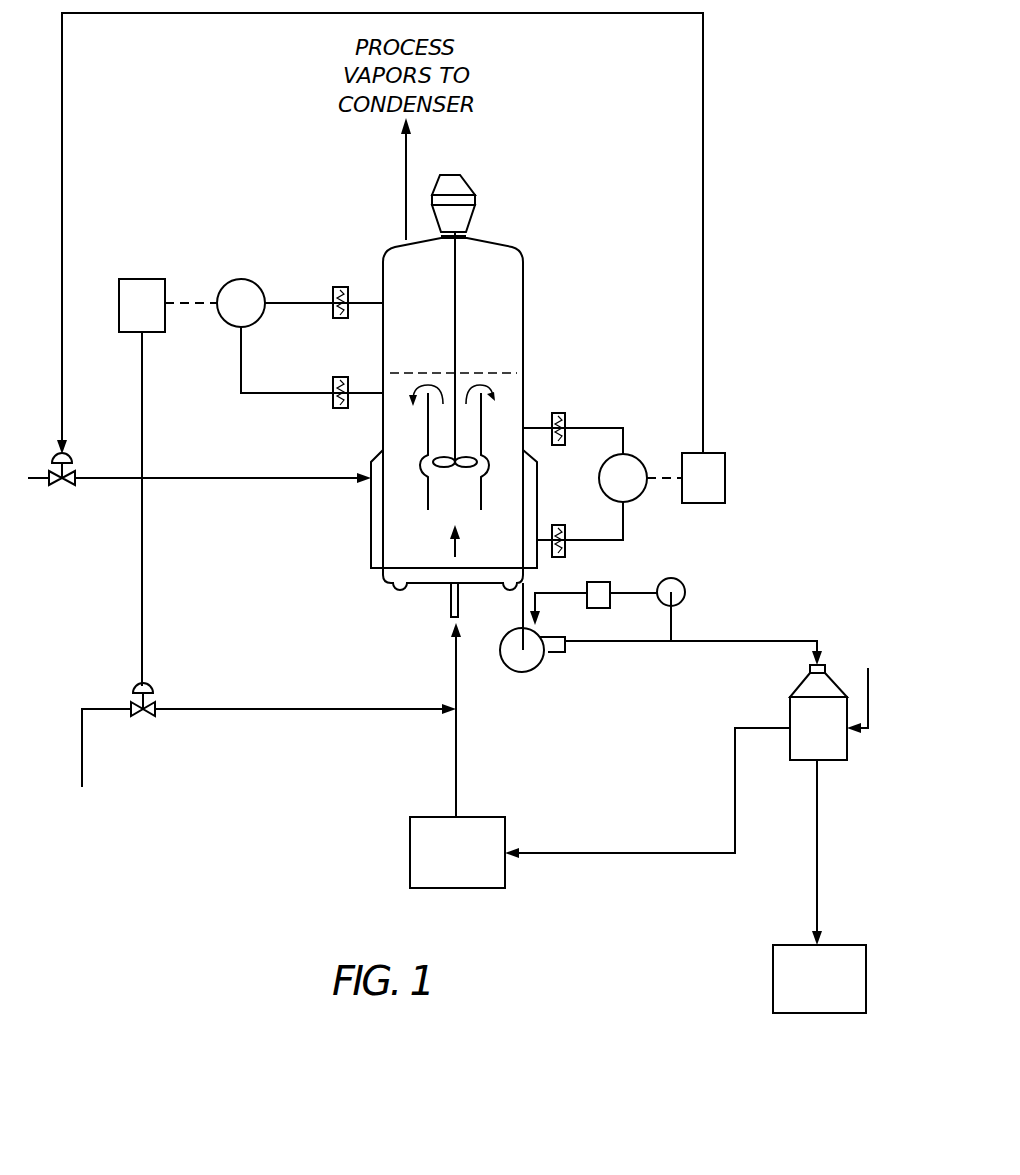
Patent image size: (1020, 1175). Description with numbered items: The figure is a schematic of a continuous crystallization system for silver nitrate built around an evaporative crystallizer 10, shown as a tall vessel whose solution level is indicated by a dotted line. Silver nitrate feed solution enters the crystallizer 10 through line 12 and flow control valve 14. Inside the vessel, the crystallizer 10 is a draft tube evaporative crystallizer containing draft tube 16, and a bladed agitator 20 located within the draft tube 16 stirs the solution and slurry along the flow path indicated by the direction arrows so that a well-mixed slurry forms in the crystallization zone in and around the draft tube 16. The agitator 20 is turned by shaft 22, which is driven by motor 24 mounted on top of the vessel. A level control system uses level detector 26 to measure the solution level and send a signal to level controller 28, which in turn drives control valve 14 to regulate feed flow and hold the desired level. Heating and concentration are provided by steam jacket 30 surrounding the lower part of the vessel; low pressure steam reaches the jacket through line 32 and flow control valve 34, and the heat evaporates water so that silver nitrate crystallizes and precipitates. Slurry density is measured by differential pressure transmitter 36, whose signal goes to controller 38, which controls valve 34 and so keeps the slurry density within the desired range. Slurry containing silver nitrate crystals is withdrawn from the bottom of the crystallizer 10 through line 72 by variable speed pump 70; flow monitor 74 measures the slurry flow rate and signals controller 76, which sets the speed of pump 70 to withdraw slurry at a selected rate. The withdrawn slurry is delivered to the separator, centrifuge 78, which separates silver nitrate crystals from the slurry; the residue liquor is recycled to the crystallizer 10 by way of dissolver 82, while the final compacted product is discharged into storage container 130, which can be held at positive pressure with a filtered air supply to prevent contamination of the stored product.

The evaporative crystallizer 10 is at (525, 265).
The line 12 is at (245, 705).
The flow control valve 14 is at (153, 701).
The draft tube 16 is at (483, 418).
The bladed agitator 20 is at (466, 470).
The shaft 22 is at (457, 331).
The motor 24 is at (467, 183).
The level detector 26 is at (250, 276).
The level controller 28 is at (142, 278).
The steam jacket 30 is at (370, 522).
The line 32 is at (218, 477).
The flow control valve 34 is at (72, 477).
The differential pressure transmitter 36 is at (637, 455).
The controller 38 is at (718, 452).
The variable speed pump 70 is at (541, 668).
The line 72 is at (522, 601).
The flow monitor 74 is at (682, 585).
The controller 76 is at (605, 582).
The centrifuge 78 is at (795, 690).
The dissolver 82 is at (508, 828).
The storage container 130 is at (783, 945).